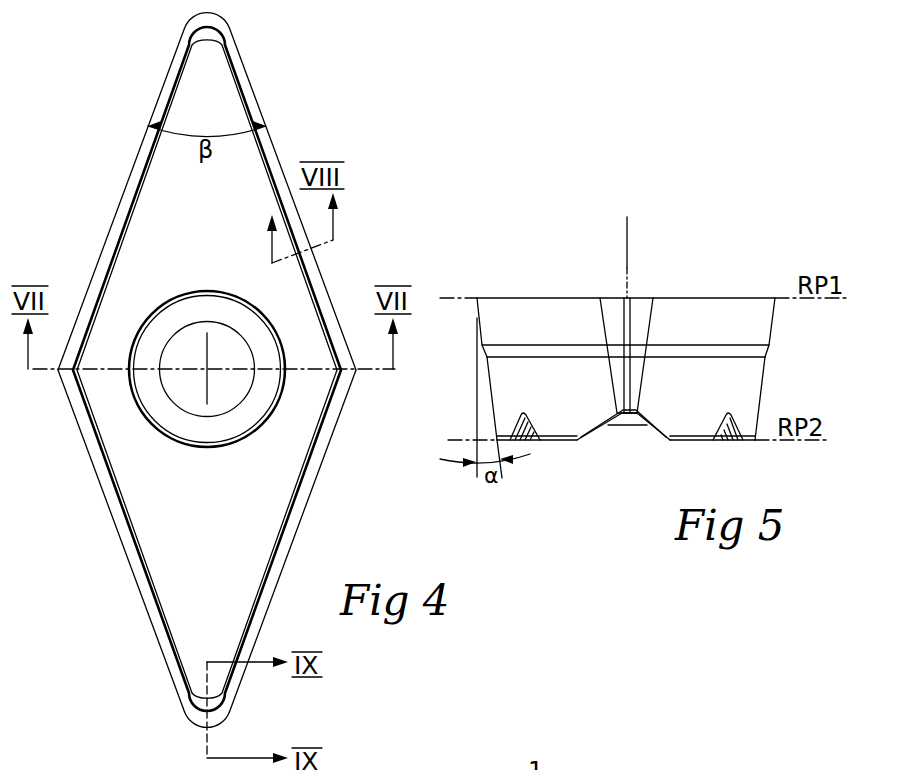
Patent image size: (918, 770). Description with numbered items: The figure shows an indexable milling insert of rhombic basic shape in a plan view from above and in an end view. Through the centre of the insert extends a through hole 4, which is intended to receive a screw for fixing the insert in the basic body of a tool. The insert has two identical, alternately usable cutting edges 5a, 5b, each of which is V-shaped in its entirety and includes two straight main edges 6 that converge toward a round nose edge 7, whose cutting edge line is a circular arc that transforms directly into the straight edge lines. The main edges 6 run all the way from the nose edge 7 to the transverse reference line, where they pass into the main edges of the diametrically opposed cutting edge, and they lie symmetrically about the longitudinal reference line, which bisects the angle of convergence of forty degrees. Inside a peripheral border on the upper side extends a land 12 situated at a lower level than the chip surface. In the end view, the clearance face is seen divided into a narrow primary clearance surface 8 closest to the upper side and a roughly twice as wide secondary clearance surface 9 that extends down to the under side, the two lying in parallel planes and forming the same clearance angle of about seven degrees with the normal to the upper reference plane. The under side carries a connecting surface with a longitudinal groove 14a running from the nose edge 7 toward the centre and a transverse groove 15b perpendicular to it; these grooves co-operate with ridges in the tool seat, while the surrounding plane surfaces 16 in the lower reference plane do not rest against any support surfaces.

In FIG. 4, the through hole 4 is at (192, 346).
In FIG. 4, the cutting edge 5a is at (142, 621).
In FIG. 4, the cutting edge 5b is at (264, 92).
In FIG. 4, the main edge 6 is at (103, 493).
In FIG. 4, the nose edge 7 is at (197, 727).
In FIG. 4, the land 12 is at (223, 519).
In FIG. 5, the primary clearance surface 8 is at (711, 339).
In FIG. 5, the secondary clearance surface 9 is at (699, 404).
In FIG. 5, the longitudinal groove 14a is at (603, 430).
In FIG. 5, the transverse groove 15b is at (720, 428).
In FIG. 5, the plane surface 16 is at (557, 441).